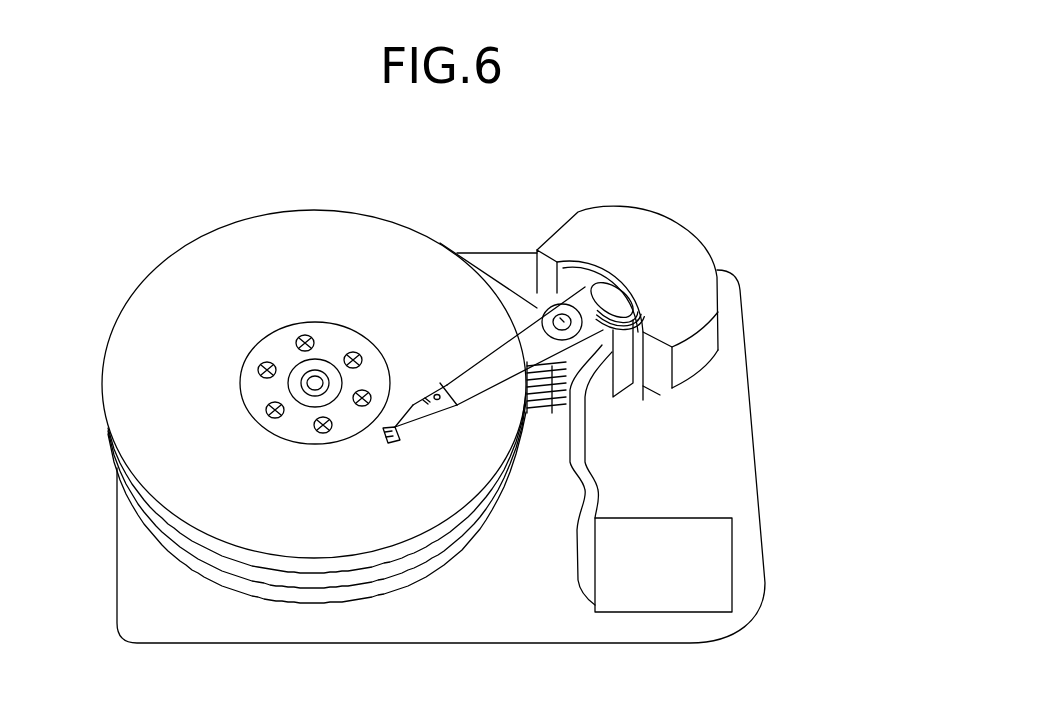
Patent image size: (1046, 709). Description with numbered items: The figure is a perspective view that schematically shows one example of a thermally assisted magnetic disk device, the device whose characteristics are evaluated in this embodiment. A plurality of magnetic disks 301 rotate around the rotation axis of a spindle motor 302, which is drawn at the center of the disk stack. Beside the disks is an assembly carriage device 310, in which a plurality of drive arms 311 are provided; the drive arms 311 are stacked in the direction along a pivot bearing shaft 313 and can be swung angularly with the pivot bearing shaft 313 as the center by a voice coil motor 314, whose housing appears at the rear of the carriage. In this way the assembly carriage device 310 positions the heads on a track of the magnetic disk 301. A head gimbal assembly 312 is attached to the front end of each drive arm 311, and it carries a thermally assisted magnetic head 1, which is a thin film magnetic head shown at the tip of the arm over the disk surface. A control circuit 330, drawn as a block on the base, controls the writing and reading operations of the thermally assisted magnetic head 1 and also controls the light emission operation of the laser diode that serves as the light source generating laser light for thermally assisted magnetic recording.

The thermally assisted magnetic head 1 is at (397, 443).
The magnetic disk 301 is at (197, 257).
The spindle motor 302 is at (316, 383).
The assembly carriage device 310 is at (602, 412).
The drive arm 311 is at (490, 360).
The head gimbal assembly 312 is at (407, 402).
The pivot bearing shaft 313 is at (557, 310).
The voice coil motor 314 is at (643, 390).
The control circuit 330 is at (667, 612).